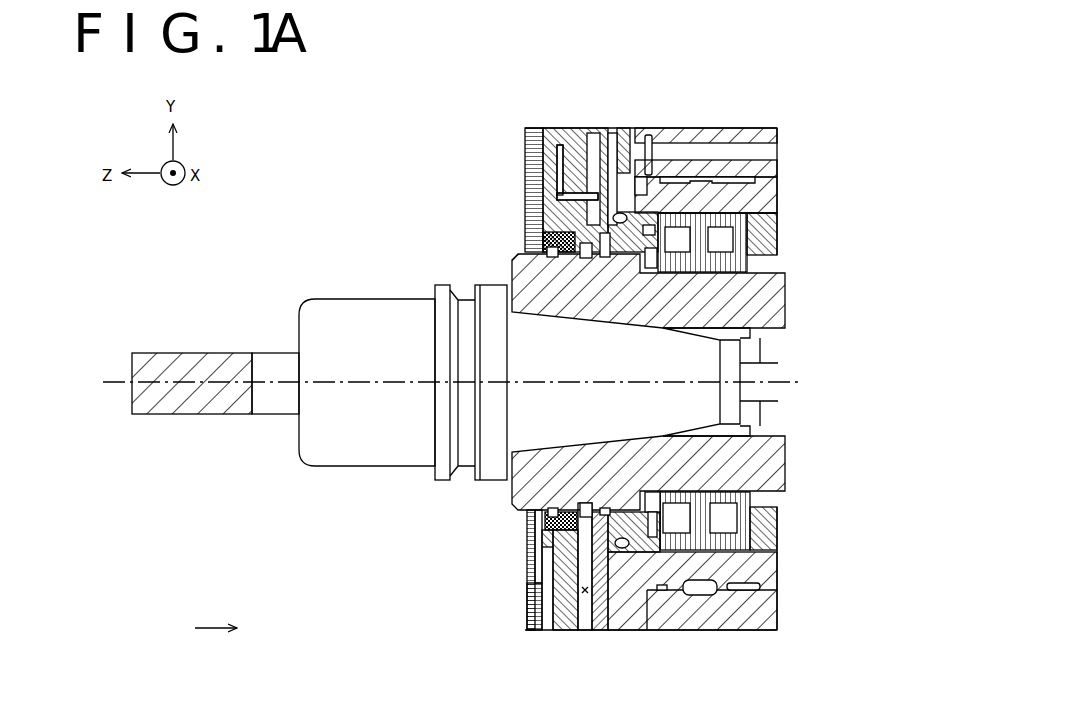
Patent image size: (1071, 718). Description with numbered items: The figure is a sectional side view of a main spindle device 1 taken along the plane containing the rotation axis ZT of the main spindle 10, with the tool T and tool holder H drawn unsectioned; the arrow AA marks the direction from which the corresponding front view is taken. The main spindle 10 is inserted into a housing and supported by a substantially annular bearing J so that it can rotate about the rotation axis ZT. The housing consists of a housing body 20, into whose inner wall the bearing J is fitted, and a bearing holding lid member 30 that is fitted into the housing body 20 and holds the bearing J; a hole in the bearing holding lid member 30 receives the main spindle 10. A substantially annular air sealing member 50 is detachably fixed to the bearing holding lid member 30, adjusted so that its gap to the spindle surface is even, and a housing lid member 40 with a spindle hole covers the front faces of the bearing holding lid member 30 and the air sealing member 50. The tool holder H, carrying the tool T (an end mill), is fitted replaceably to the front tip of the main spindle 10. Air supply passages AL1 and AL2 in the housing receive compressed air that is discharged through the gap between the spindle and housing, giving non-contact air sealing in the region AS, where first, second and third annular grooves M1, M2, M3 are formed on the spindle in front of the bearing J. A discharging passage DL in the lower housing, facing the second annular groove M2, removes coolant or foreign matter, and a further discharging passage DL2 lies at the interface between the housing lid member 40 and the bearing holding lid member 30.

The main spindle device 1 is at (318, 273).
The main spindle 10 is at (512, 508).
The housing body 20 is at (758, 192).
The bearing holding lid member 30 is at (572, 127).
The housing lid member 40 is at (524, 142).
The air sealing member 50 is at (550, 546).
The tool holder H is at (437, 483).
The tool T is at (170, 352).
The rotation axis ZT is at (118, 389).
The arrow AA is at (193, 616).
The air supply passage AL1 is at (556, 203).
The air supply passage AL2 is at (590, 187).
The AS portion AS is at (527, 226).
The discharging passage DL is at (586, 596).
The discharging passage DL2 is at (549, 605).
The bearing J is at (668, 600).
The first annular groove M1 is at (552, 505).
The second annular groove M2 is at (586, 504).
The third annular groove M3 is at (606, 506).